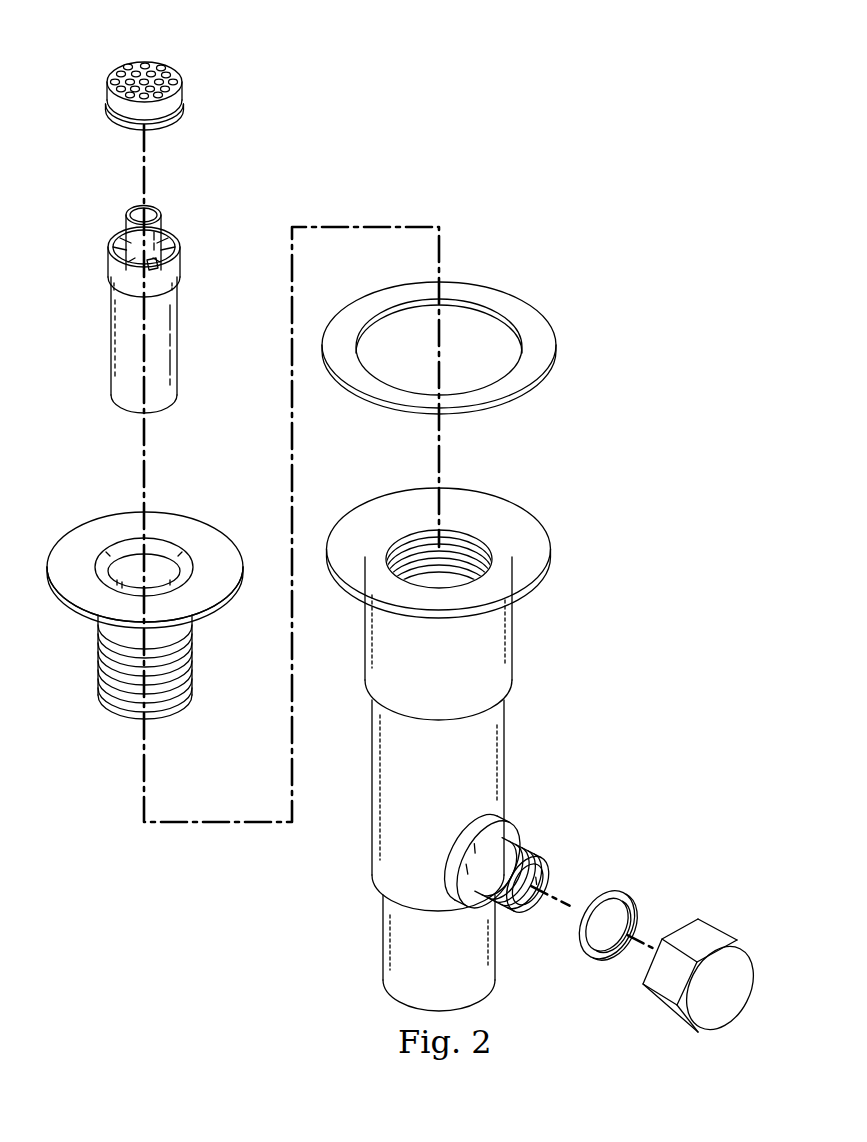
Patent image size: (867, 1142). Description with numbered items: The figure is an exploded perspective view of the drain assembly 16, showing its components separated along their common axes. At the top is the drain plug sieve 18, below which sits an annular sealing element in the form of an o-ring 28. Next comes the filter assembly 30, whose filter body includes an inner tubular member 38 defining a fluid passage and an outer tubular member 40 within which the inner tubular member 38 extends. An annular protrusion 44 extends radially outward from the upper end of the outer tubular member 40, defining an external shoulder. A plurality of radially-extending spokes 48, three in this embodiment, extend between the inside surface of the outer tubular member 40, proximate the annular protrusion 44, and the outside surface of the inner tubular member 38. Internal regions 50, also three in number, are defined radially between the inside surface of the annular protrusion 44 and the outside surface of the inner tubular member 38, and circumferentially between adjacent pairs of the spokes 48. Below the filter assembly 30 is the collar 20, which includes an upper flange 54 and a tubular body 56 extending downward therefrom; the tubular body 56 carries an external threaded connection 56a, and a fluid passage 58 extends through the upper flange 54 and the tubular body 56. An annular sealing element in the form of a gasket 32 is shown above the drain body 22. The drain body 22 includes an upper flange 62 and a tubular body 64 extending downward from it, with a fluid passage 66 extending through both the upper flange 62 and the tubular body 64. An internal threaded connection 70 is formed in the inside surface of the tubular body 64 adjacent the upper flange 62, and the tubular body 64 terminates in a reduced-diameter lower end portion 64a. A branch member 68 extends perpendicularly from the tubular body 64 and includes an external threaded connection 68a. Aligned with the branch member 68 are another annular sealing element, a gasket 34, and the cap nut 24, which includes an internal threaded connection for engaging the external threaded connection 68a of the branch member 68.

The drain assembly 16 is at (636, 113).
The drain plug sieve 18 is at (130, 59).
The o-ring 28 is at (184, 103).
The filter assembly 30 is at (108, 358).
The inner tubular member 38 is at (150, 208).
The spokes 48 is at (122, 240).
The annular protrusion 44 is at (108, 265).
The internal regions 50 is at (181, 254).
The outer tubular member 40 is at (179, 344).
The collar 20 is at (200, 530).
The upper flange 54 is at (105, 522).
The fluid passage 58 is at (152, 570).
The tubular body 56 is at (97, 660).
The external threaded connection 56a is at (115, 708).
The gasket 32 is at (557, 351).
The drain body 22 is at (506, 732).
The upper flange 62 is at (550, 548).
The fluid passage 66 is at (432, 523).
The internal threaded connection 70 is at (412, 560).
The tubular body 64 is at (373, 802).
The reduced-diameter lower end portion 64a is at (384, 938).
The branch member 68 is at (505, 829).
The external threaded connection 68a is at (537, 842).
The gasket 34 is at (624, 889).
The cap nut 24 is at (705, 934).